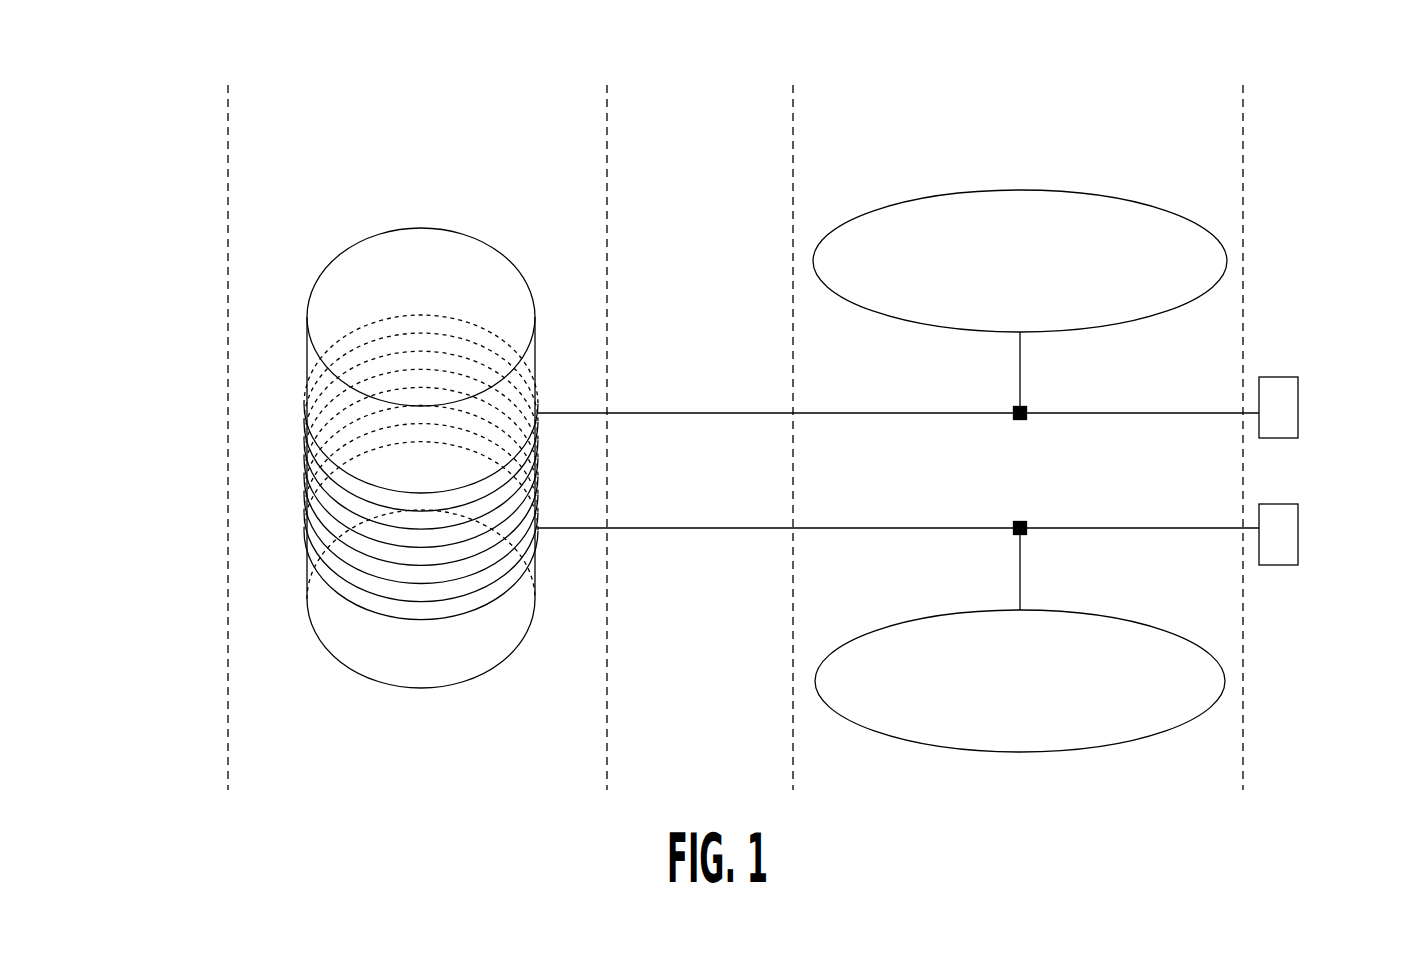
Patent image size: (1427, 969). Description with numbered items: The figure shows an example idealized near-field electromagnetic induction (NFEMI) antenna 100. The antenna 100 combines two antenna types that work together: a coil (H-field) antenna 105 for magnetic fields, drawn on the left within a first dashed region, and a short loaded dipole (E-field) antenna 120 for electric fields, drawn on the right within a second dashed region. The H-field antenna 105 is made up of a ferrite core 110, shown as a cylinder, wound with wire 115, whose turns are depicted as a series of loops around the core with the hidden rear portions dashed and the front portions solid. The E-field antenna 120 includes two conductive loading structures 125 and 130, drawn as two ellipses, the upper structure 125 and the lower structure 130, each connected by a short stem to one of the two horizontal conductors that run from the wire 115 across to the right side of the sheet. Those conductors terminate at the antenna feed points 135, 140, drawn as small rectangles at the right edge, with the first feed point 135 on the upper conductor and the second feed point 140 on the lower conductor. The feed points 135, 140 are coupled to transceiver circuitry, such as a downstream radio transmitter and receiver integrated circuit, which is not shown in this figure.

The near-field electromagnetic induction (NFEMI) antenna 100 is at (138, 87).
The coil (H-field) antenna 105 is at (608, 77).
The ferrite core 110 is at (463, 235).
The wire 115 is at (368, 612).
The short loaded dipole (E-field) antenna 120 is at (1252, 77).
The conductive loading structure 125 is at (1090, 194).
The conductive loading structure 130 is at (1148, 628).
The feed point 135 is at (1298, 414).
The feed point 140 is at (1298, 531).